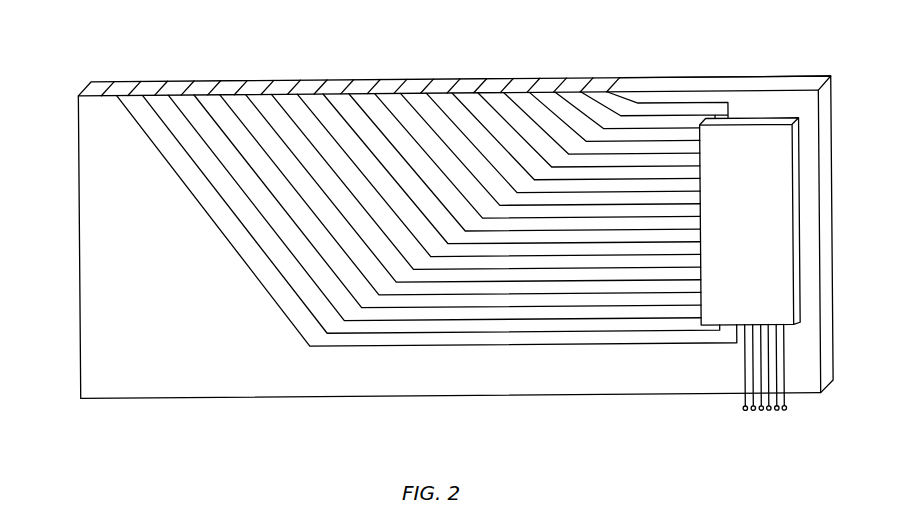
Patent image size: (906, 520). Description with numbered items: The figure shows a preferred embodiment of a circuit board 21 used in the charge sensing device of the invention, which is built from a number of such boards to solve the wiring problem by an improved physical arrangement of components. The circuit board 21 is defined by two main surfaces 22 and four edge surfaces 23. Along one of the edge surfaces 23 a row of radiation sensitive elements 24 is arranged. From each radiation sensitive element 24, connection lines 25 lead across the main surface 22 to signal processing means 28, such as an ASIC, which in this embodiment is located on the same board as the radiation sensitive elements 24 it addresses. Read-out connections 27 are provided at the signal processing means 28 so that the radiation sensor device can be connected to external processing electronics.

The circuit board 21 is at (778, 77).
The main surface 22 is at (97, 221).
The edge surface 23 is at (665, 84).
The radiation sensitive elements 24 is at (172, 87).
The connection lines 25 is at (273, 302).
The read-out connections 27 is at (785, 395).
The signal processing means 28 is at (782, 210).